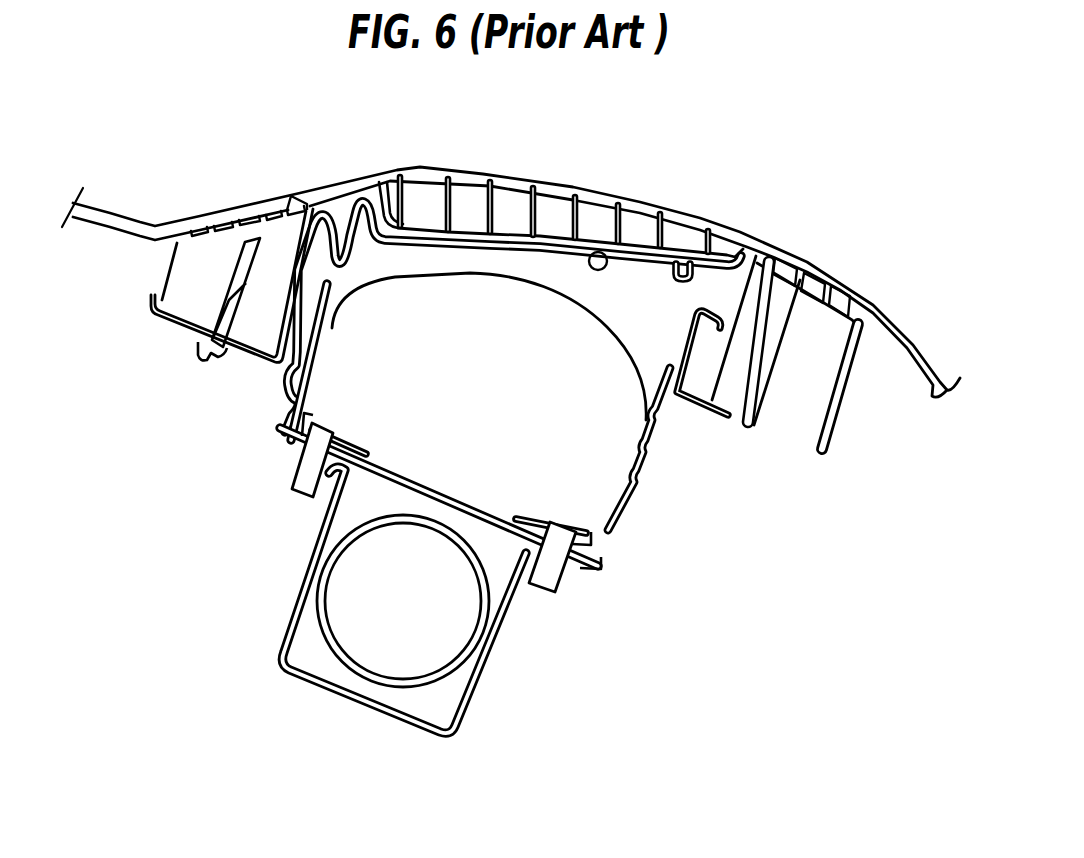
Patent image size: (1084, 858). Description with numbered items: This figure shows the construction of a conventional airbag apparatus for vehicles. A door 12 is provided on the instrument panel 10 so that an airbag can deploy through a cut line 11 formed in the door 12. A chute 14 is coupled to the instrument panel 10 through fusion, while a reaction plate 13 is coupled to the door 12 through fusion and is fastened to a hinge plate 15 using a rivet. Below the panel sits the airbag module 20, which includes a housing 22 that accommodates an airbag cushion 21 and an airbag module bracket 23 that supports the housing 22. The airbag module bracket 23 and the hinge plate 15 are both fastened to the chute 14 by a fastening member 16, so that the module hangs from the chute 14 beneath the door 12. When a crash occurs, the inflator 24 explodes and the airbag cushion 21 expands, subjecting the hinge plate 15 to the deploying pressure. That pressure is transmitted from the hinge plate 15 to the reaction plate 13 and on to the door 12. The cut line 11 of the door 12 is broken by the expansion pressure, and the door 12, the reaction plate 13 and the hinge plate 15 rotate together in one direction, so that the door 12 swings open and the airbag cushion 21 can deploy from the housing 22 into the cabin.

The instrument panel 10 is at (164, 225).
The cut line 11 is at (306, 198).
The door 12 is at (520, 182).
The reaction plate 13 is at (686, 253).
The chute 14 is at (160, 297).
The hinge plate 15 is at (599, 250).
The fastening member 16 is at (200, 347).
The airbag module 20 is at (520, 633).
The airbag cushion 21 is at (588, 508).
The housing 22 is at (279, 425).
The airbag module bracket 23 is at (227, 360).
The inflator 24 is at (338, 620).